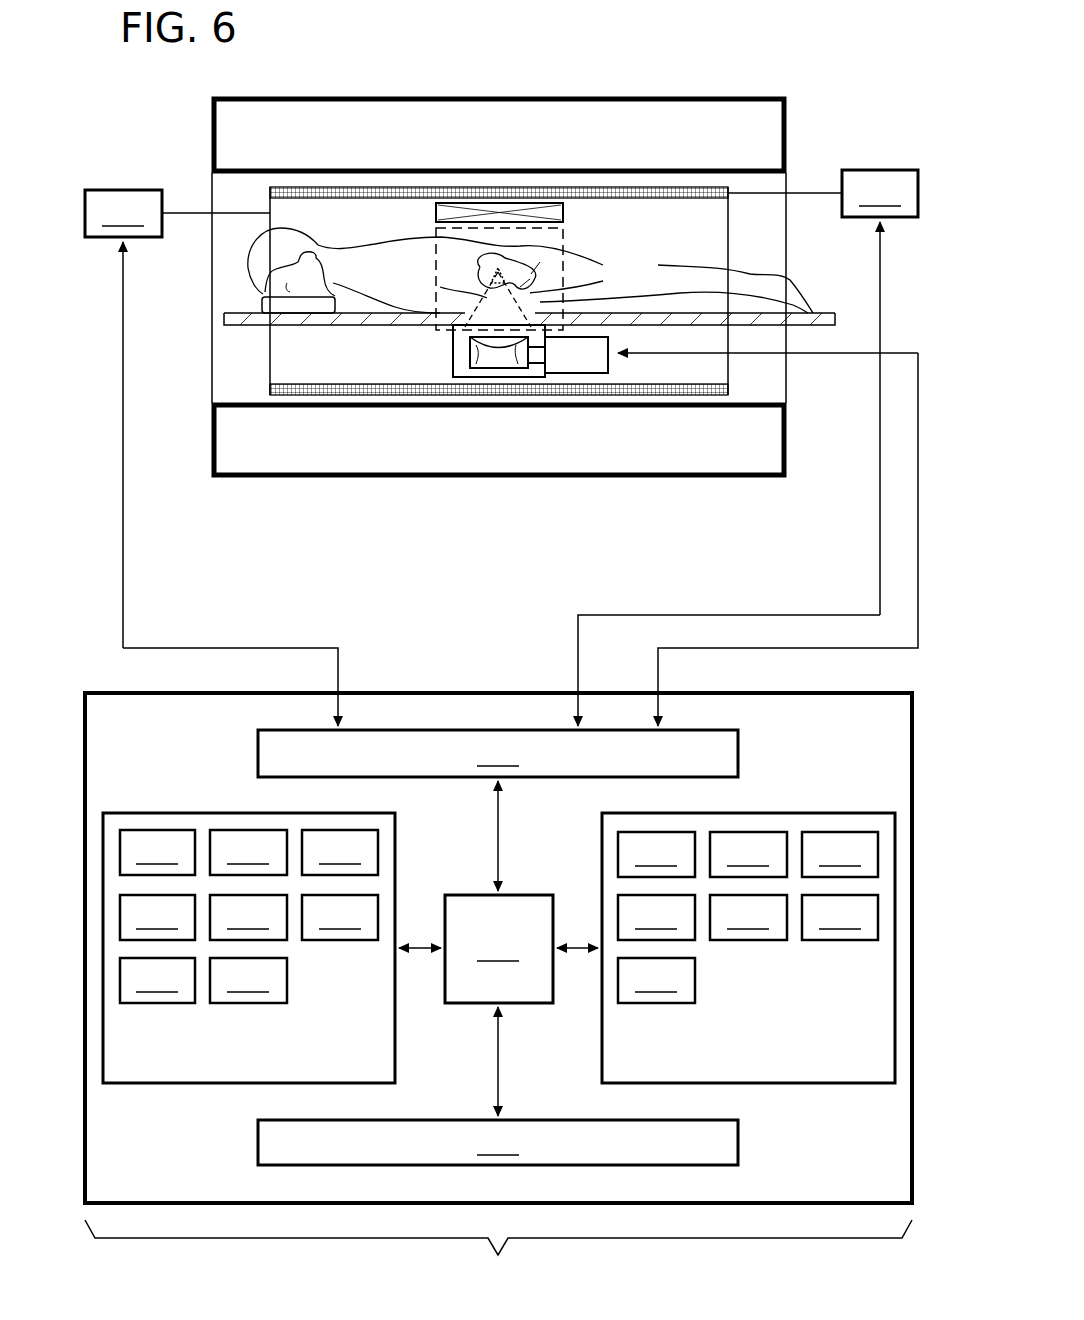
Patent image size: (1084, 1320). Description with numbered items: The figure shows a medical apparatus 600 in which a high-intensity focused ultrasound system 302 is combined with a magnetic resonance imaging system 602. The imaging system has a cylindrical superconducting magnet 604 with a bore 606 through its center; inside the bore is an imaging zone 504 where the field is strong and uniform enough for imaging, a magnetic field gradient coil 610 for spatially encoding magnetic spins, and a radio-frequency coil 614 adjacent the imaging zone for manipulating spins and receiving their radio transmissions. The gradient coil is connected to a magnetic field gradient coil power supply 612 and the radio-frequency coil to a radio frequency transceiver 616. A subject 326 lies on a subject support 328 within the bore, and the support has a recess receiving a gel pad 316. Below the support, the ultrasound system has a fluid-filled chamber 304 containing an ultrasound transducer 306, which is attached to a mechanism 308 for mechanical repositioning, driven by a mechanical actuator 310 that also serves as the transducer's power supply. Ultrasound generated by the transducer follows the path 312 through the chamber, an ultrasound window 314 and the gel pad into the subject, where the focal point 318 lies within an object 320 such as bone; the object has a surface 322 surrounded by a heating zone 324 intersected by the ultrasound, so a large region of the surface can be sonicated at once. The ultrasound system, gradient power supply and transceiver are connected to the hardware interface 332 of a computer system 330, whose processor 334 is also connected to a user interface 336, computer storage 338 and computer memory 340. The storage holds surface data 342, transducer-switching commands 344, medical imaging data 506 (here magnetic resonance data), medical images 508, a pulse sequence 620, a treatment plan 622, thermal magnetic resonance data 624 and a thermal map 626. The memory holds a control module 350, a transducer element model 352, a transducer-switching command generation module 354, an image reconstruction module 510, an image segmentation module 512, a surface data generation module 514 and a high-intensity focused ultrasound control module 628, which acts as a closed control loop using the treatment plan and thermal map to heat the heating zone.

The medical apparatus 600 is at (498, 1257).
The magnetic resonance imaging system 602 is at (776, 76).
The magnet 604 is at (788, 140).
The bore 606 is at (745, 227).
The magnetic field gradient coil 610 is at (316, 188).
The magnetic field gradient coil power supply 612 is at (823, 392).
The radio-frequency coil 614 is at (565, 212).
The radio frequency transceiver 616 is at (177, 419).
The imaging zone 504 is at (436, 236).
The high-intensity focused ultrasound system 302 is at (408, 352).
The fluid-filled chamber 304 is at (455, 372).
The ultrasound transducer 306 is at (500, 362).
The mechanism 308 is at (536, 365).
The mechanical actuator 310 is at (585, 375).
The path of ultrasound 312 is at (440, 287).
The ultrasound window 314 is at (476, 352).
The gel pad 316 is at (512, 352).
The focal point 318 is at (498, 275).
The object 320 is at (480, 267).
The surface 322 is at (540, 262).
The heating zone 324 is at (520, 287).
The subject 326 is at (248, 260).
The subject support 328 is at (255, 324).
The computer system 330 is at (460, 693).
The hardware interface 332 is at (498, 753).
The processor 334 is at (498, 948).
The user interface 336 is at (498, 1142).
The computer storage 338 is at (197, 813).
The computer memory 340 is at (803, 813).
The surface data 342 is at (157, 852).
The transducer-switching commands 344 is at (248, 852).
The control module 350 is at (656, 854).
The transducer element model 352 is at (748, 854).
The transducer-switching command generation module 354 is at (840, 854).
The medical imaging data 506 is at (340, 852).
The medical images 508 is at (157, 917).
The image reconstruction module 510 is at (656, 917).
The image segmentation module 512 is at (748, 917).
The surface data generation module 514 is at (840, 917).
The pulse sequence 620 is at (248, 917).
The treatment plan 622 is at (340, 917).
The thermal magnetic resonance data 624 is at (157, 980).
The thermal map 626 is at (248, 980).
The high-intensity focused ultrasound control module 628 is at (656, 980).